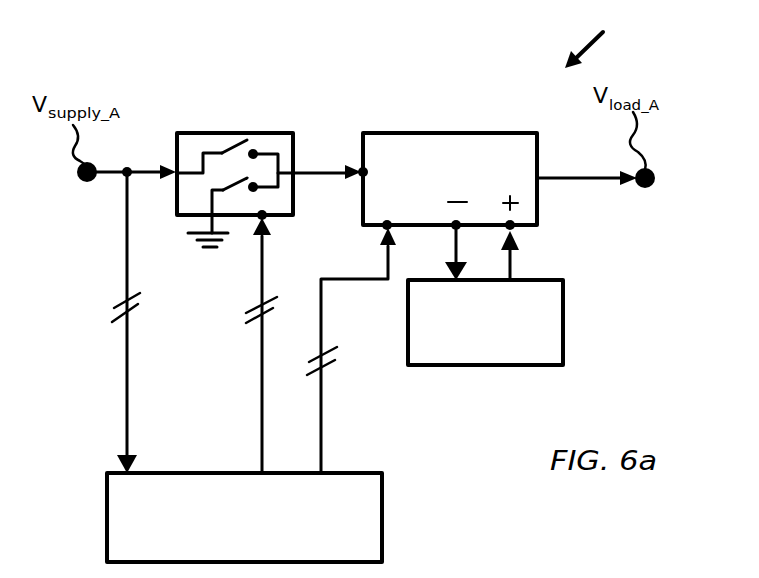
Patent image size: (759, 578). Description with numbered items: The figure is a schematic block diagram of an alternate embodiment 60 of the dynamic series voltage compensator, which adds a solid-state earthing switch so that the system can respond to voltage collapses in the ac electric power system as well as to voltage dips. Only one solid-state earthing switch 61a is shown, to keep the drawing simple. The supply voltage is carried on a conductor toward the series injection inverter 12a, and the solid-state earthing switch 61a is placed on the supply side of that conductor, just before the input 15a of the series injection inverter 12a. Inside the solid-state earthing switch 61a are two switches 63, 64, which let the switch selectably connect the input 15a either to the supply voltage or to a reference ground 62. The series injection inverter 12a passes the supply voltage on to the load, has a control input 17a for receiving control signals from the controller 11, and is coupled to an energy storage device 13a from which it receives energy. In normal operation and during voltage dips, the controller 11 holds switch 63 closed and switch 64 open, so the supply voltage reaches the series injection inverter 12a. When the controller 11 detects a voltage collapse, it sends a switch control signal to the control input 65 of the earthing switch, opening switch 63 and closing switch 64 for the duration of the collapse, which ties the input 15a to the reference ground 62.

The alternate embodiment 60 is at (597, 36).
The solid-state earthing switch 61a is at (190, 133).
The switch 63 is at (243, 133).
The switch 64 is at (258, 190).
The reference ground 62 is at (195, 250).
The control input 65 is at (258, 222).
The input 15a is at (360, 168).
The series injection inverter 12a is at (465, 132).
The control input 17a is at (382, 232).
The energy storage device 13a is at (487, 365).
The controller 11 is at (382, 507).